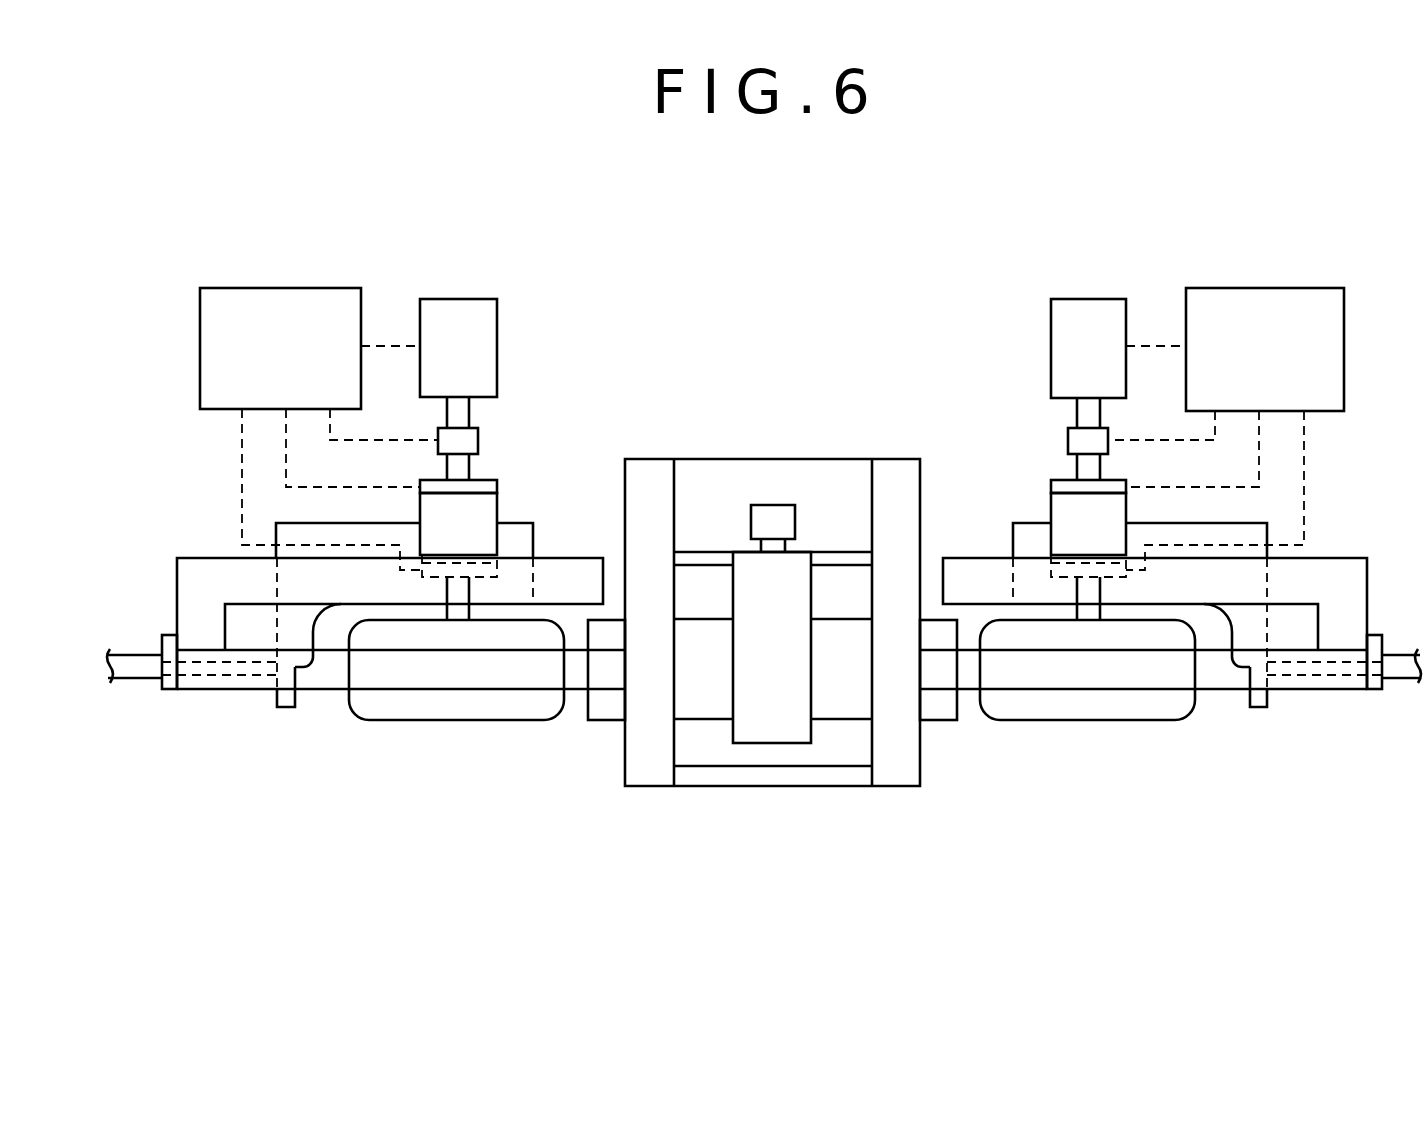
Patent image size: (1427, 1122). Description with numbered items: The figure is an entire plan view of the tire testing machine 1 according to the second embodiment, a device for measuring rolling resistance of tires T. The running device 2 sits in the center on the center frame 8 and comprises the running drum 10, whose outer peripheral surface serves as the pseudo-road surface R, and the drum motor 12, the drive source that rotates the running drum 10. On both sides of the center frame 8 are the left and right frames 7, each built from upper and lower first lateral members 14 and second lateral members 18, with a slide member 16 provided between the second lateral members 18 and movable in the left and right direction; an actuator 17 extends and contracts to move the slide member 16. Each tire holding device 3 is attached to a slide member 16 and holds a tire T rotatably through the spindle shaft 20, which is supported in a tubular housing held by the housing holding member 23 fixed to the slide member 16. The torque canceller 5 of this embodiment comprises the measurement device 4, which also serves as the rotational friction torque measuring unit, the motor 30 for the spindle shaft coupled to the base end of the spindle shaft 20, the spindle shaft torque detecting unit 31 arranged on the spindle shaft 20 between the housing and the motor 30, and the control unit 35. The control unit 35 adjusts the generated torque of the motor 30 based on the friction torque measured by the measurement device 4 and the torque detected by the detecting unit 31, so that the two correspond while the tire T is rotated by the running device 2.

The tire testing machine 1 is at (800, 275).
The running device 2 is at (776, 500).
The tire holding device 3 is at (530, 515).
The measurement device 4 is at (477, 487).
The torque canceller 5 is at (516, 301).
The left and right frame 7 is at (188, 555).
The center frame 8 is at (893, 475).
The running drum 10 is at (705, 708).
The drum motor 12 is at (780, 725).
The first lateral member 14 is at (330, 689).
The slide member 16 is at (283, 707).
The actuator 17 is at (135, 680).
The second lateral member 18 is at (203, 625).
The spindle shaft 20 is at (455, 612).
The housing holding member 23 is at (487, 507).
The motor for the spindle shaft 30 is at (447, 317).
The spindle shaft torque detecting unit 31 is at (468, 437).
The control unit 35 is at (278, 298).
The tire T is at (500, 702).
The pseudo-road surface R is at (585, 702).